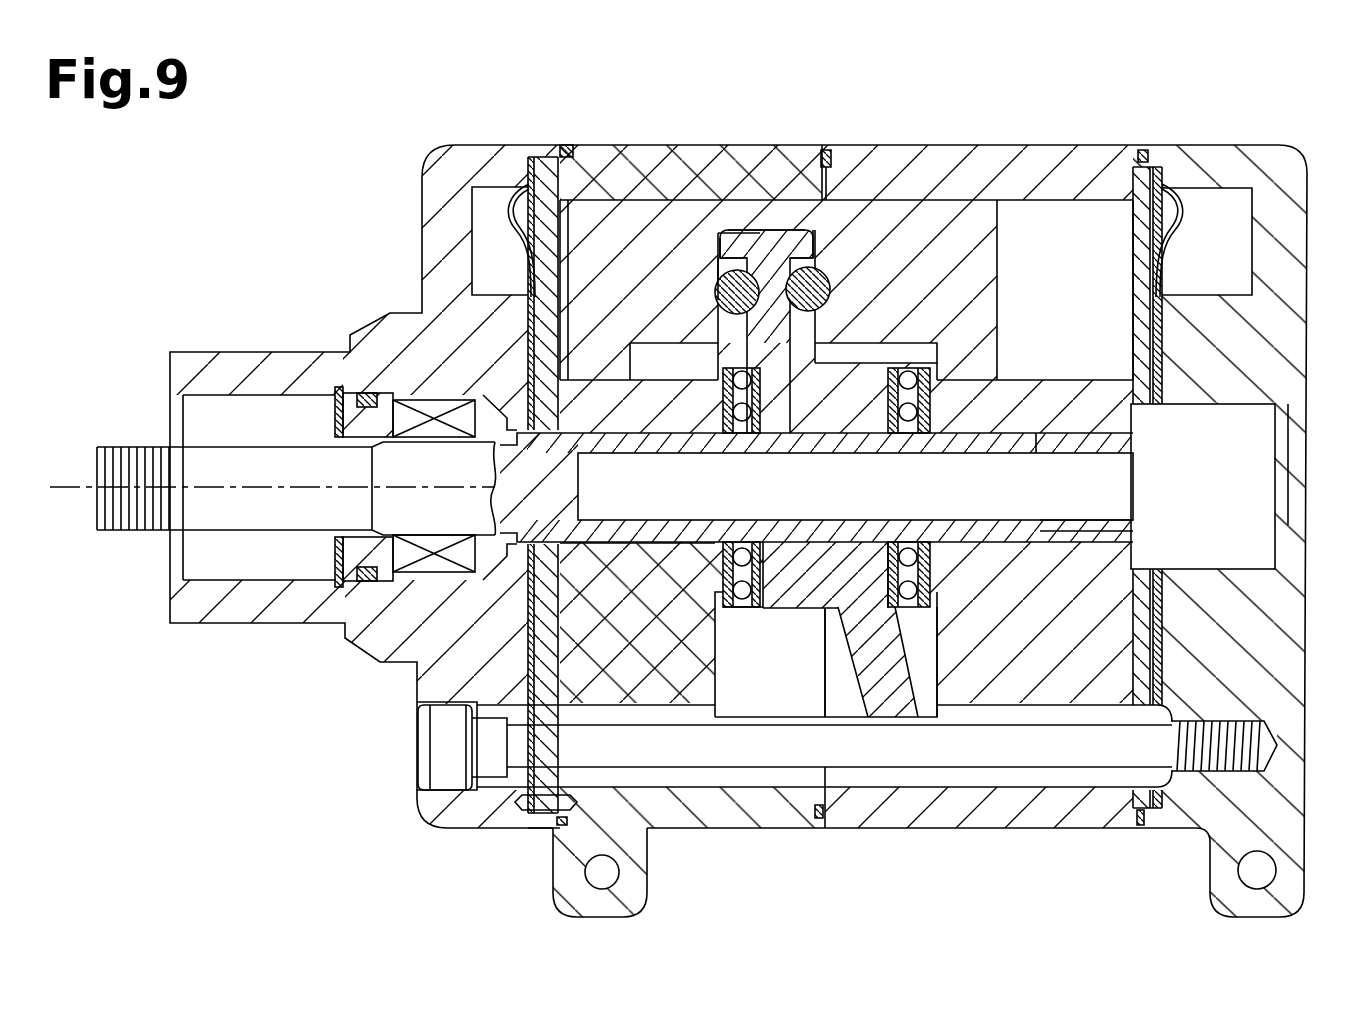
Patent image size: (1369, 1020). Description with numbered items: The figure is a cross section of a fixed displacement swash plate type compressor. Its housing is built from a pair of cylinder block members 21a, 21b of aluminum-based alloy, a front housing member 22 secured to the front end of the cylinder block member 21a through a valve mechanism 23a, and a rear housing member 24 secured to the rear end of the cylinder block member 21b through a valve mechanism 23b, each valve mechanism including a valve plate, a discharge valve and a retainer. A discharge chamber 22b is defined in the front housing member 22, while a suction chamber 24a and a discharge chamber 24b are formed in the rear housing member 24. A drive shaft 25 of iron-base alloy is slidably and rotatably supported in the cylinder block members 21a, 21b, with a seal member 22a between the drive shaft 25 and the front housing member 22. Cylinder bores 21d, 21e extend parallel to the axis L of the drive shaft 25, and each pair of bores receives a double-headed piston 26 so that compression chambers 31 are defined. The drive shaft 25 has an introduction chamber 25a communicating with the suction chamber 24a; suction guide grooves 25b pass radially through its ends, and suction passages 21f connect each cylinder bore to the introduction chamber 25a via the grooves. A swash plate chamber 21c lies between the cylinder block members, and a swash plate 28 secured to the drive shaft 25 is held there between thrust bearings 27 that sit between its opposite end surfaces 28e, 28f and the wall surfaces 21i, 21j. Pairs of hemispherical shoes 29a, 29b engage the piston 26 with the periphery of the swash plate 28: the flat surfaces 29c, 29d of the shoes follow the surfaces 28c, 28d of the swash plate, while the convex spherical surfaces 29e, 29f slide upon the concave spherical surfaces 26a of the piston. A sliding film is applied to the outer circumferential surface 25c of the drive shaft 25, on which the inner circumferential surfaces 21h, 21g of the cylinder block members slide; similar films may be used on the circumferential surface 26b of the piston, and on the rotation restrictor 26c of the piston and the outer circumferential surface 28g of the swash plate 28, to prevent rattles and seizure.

The cylinder block member 21a is at (952, 165).
The cylinder block member 21b is at (702, 160).
The swash plate chamber 21c is at (810, 715).
The cylinder bore 21d is at (624, 197).
The cylinder bore 21e is at (1027, 207).
The suction passage 21f is at (583, 380).
The inner circumferential surface 21g is at (1096, 533).
The inner circumferential surface 21h is at (648, 522).
The wall surface 21i is at (940, 563).
The wall surface 21j is at (722, 562).
The front housing member 22 is at (440, 168).
The seal member 22a is at (437, 410).
The discharge chamber 22b is at (524, 284).
The valve mechanism 23a is at (540, 152).
The valve mechanism 23b is at (1149, 163).
The rear housing member 24 is at (1302, 250).
The suction chamber 24a is at (1244, 478).
The discharge chamber 24b is at (1233, 270).
The drive shaft 25 is at (459, 502).
The introduction chamber 25a is at (880, 503).
The suction guide groove 25b is at (590, 525).
The outer circumferential surface 25c is at (1050, 535).
The double-headed piston 26 is at (880, 210).
The concave spherical surface 26a is at (716, 306).
The circumferential surface 26b is at (990, 385).
The rotation restrictor 26c is at (805, 190).
The thrust bearing 27 is at (738, 372).
The swash plate 28 is at (806, 595).
The surface 28c is at (857, 680).
The surface 28d is at (905, 643).
The end surface 28e is at (887, 563).
The end surface 28f is at (760, 605).
The outer circumferential surface 28g is at (760, 230).
The hemispherical shoe 29a is at (716, 272).
The hemispherical shoe 29b is at (847, 200).
The flat surface 29c is at (700, 205).
The flat surface 29d is at (783, 225).
The convex spherical surface 29e is at (725, 282).
The convex spherical surface 29f is at (830, 266).
The compression chamber 31 is at (568, 210).
The axis L is at (75, 485).